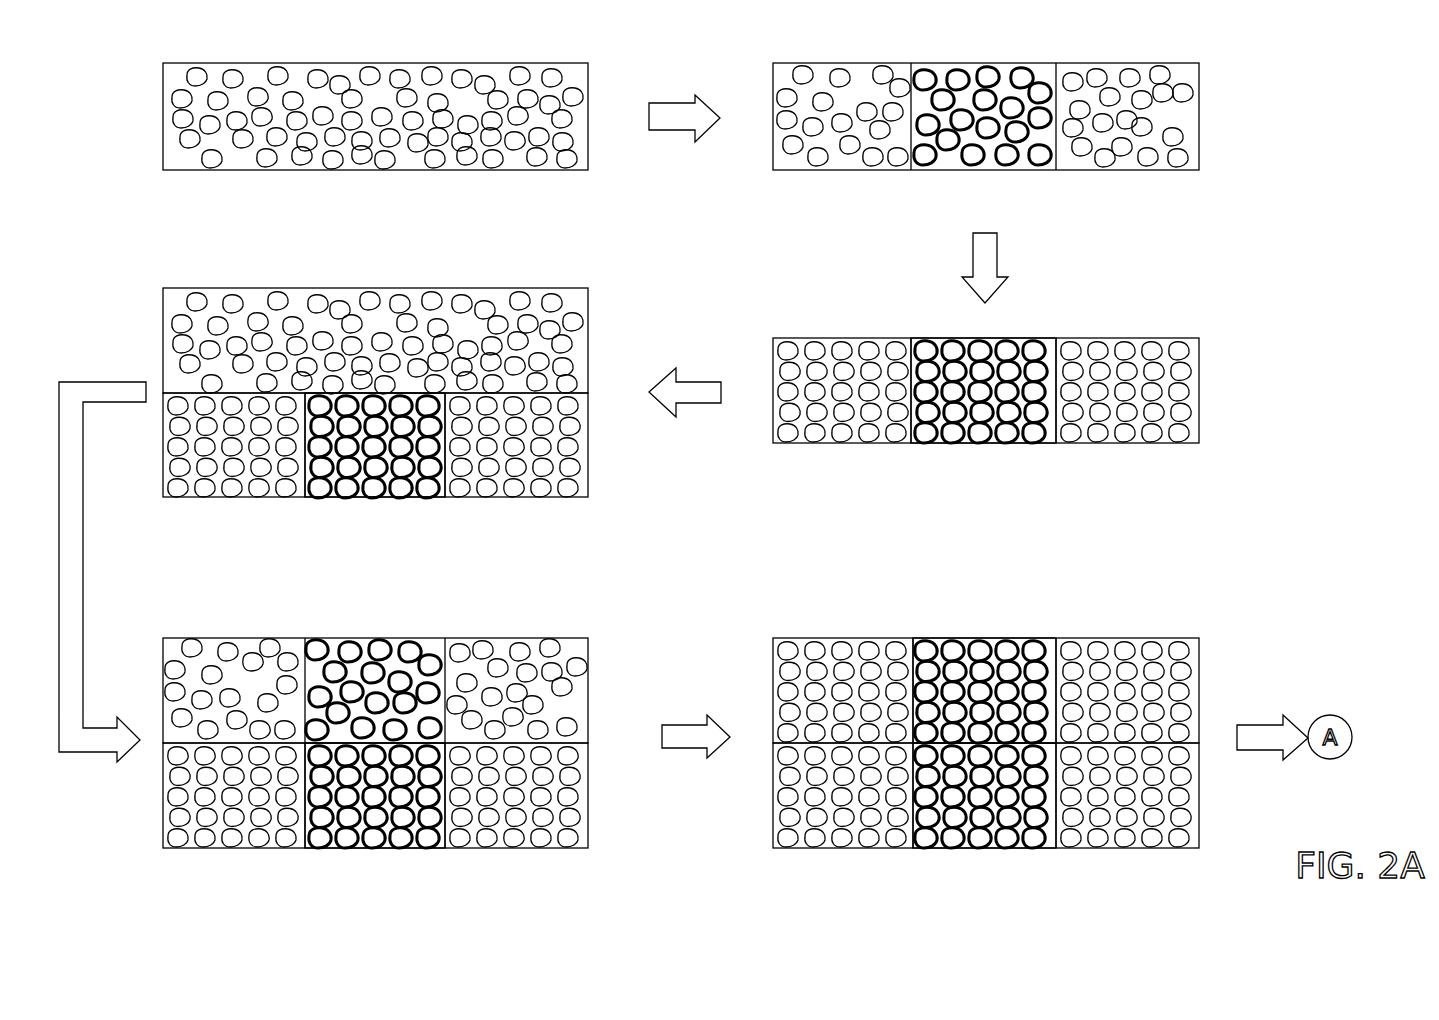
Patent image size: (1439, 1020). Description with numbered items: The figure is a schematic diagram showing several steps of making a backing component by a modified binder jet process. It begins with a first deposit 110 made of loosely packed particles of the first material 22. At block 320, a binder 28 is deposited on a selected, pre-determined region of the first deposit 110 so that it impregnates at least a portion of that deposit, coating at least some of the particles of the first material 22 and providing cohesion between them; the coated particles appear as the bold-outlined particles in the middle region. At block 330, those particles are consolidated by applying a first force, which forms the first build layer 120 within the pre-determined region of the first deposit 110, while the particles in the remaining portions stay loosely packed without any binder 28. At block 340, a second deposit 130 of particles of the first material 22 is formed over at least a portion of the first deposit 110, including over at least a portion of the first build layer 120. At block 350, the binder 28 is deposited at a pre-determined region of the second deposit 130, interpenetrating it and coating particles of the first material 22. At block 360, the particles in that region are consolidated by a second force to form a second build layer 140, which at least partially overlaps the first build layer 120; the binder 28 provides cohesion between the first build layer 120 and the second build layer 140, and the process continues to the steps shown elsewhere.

The first material 22 is at (338, 158).
The binder 28 is at (977, 162).
The first deposit 110 is at (528, 38).
The first build layer 120 is at (1006, 334).
The second deposit 130 is at (527, 277).
The second build layer 140 is at (1003, 632).
The block 320 is at (672, 103).
The block 330 is at (998, 264).
The block 340 is at (700, 382).
The block 350 is at (83, 595).
The block 360 is at (685, 723).